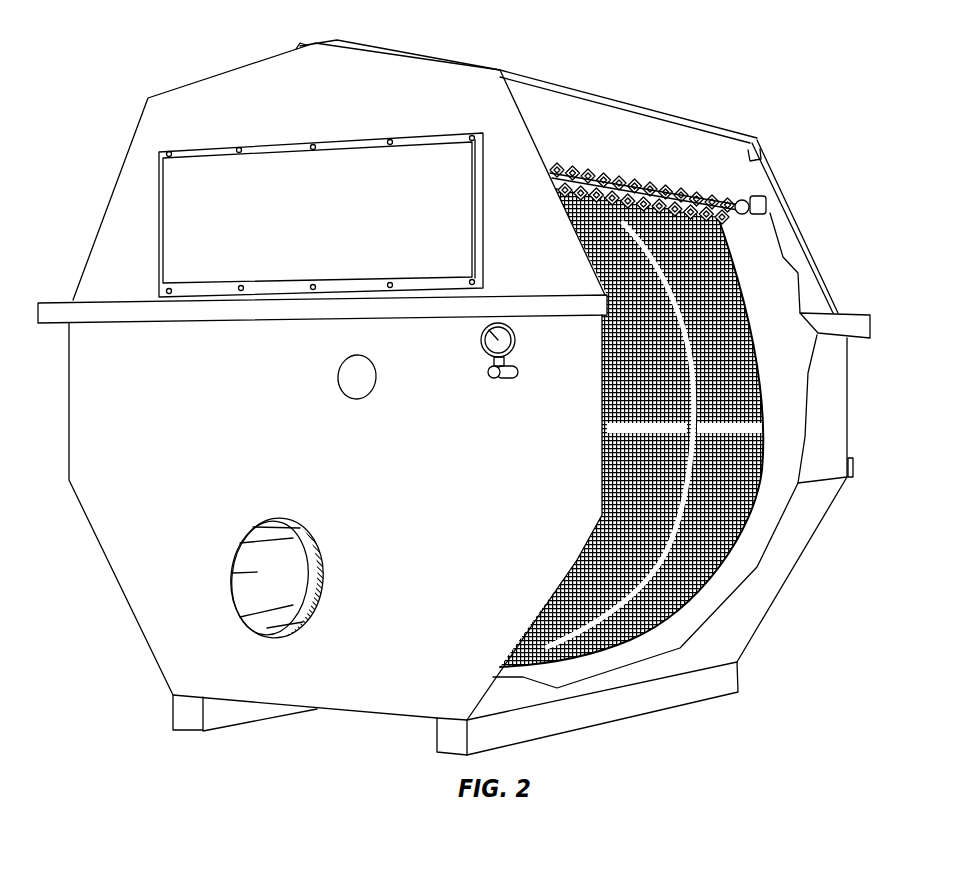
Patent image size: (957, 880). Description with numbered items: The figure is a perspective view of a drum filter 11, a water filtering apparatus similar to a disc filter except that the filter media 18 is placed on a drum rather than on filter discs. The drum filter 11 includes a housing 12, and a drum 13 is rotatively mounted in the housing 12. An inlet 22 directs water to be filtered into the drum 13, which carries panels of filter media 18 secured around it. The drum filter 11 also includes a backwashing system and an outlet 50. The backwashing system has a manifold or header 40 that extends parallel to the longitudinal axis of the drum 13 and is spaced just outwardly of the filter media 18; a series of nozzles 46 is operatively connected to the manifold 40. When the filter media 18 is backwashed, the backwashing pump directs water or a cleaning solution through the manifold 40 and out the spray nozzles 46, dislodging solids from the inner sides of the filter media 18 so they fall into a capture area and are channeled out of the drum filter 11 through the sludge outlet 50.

The drum filter 11 is at (703, 71).
The housing 12 is at (107, 367).
The drum 13 is at (566, 582).
The filter media 18 is at (733, 384).
The inlet 22 is at (268, 589).
The manifold or header 40 is at (750, 200).
The nozzles 46 is at (573, 172).
The outlet 50 is at (358, 376).